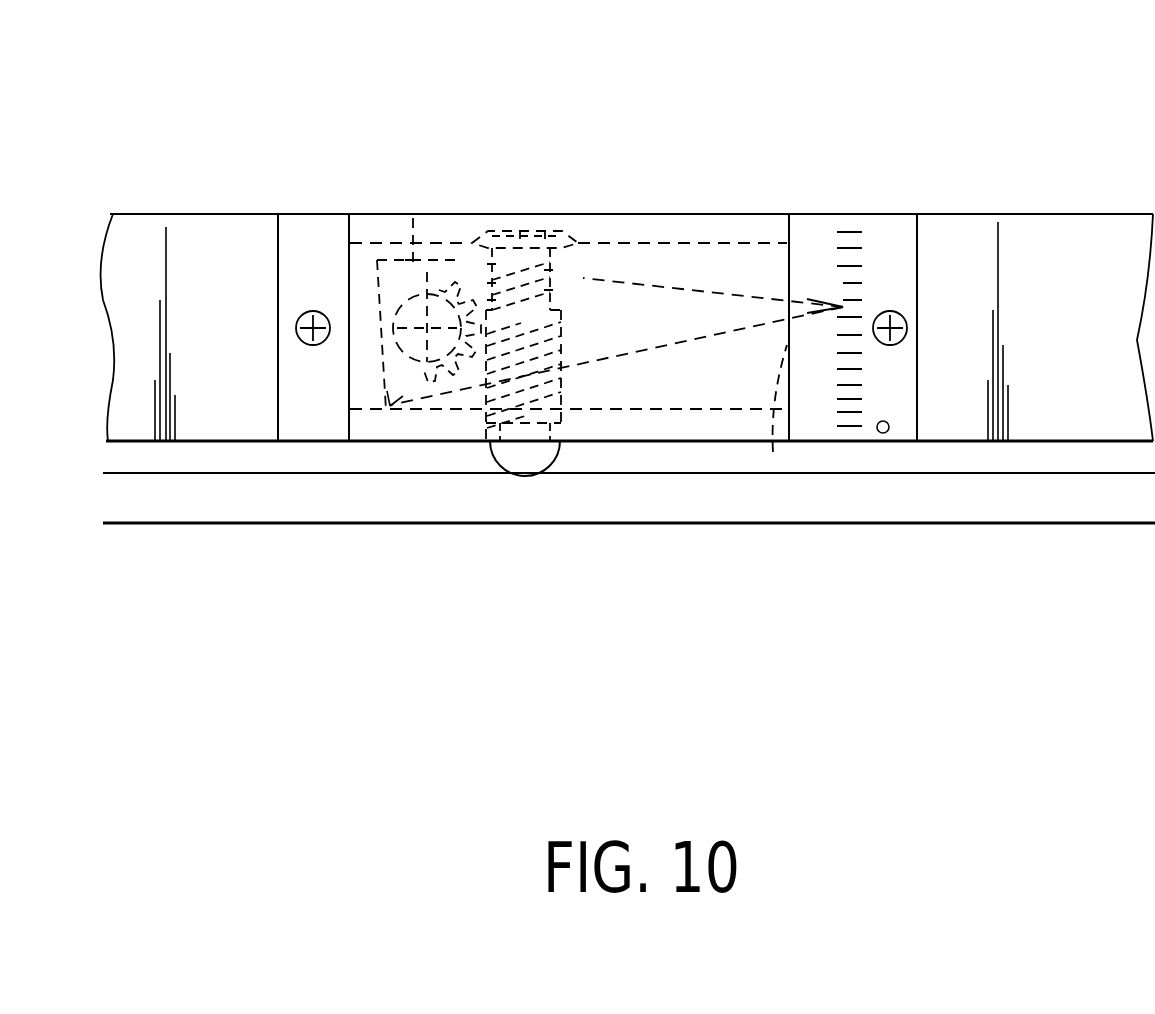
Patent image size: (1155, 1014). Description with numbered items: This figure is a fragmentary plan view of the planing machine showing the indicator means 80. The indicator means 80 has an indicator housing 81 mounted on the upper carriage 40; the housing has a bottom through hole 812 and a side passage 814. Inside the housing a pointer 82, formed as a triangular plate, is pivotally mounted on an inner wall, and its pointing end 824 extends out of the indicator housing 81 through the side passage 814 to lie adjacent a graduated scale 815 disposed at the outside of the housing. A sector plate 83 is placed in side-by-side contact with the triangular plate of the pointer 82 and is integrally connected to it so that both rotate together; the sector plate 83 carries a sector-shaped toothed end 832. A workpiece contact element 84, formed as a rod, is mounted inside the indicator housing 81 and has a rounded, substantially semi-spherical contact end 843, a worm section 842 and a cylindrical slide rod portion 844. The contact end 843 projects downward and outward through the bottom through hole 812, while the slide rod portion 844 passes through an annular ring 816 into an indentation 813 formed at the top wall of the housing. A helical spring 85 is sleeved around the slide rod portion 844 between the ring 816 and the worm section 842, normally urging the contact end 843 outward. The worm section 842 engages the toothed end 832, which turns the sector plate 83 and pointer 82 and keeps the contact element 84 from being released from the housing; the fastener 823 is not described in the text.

The upper carriage 40 is at (1093, 210).
The indicator means 80 is at (748, 212).
The indicator housing 81 is at (363, 214).
The bottom through hole 812 is at (570, 422).
The indentation 813 is at (592, 272).
The side passage 814 is at (773, 452).
The graduated scale 815 is at (898, 255).
The annular ring 816 is at (485, 222).
The pointer 82 is at (648, 330).
The pivot shaft 823 is at (413, 216).
The pointing end 824 is at (807, 303).
The sector plate 83 is at (385, 412).
The sector-shaped toothed end 832 is at (478, 380).
The workpiece contact element 84 is at (527, 232).
The worm section 842 is at (511, 428).
The rounded contact end 843 is at (525, 425).
The slide rod portion 844 is at (583, 245).
The helical spring 85 is at (615, 245).